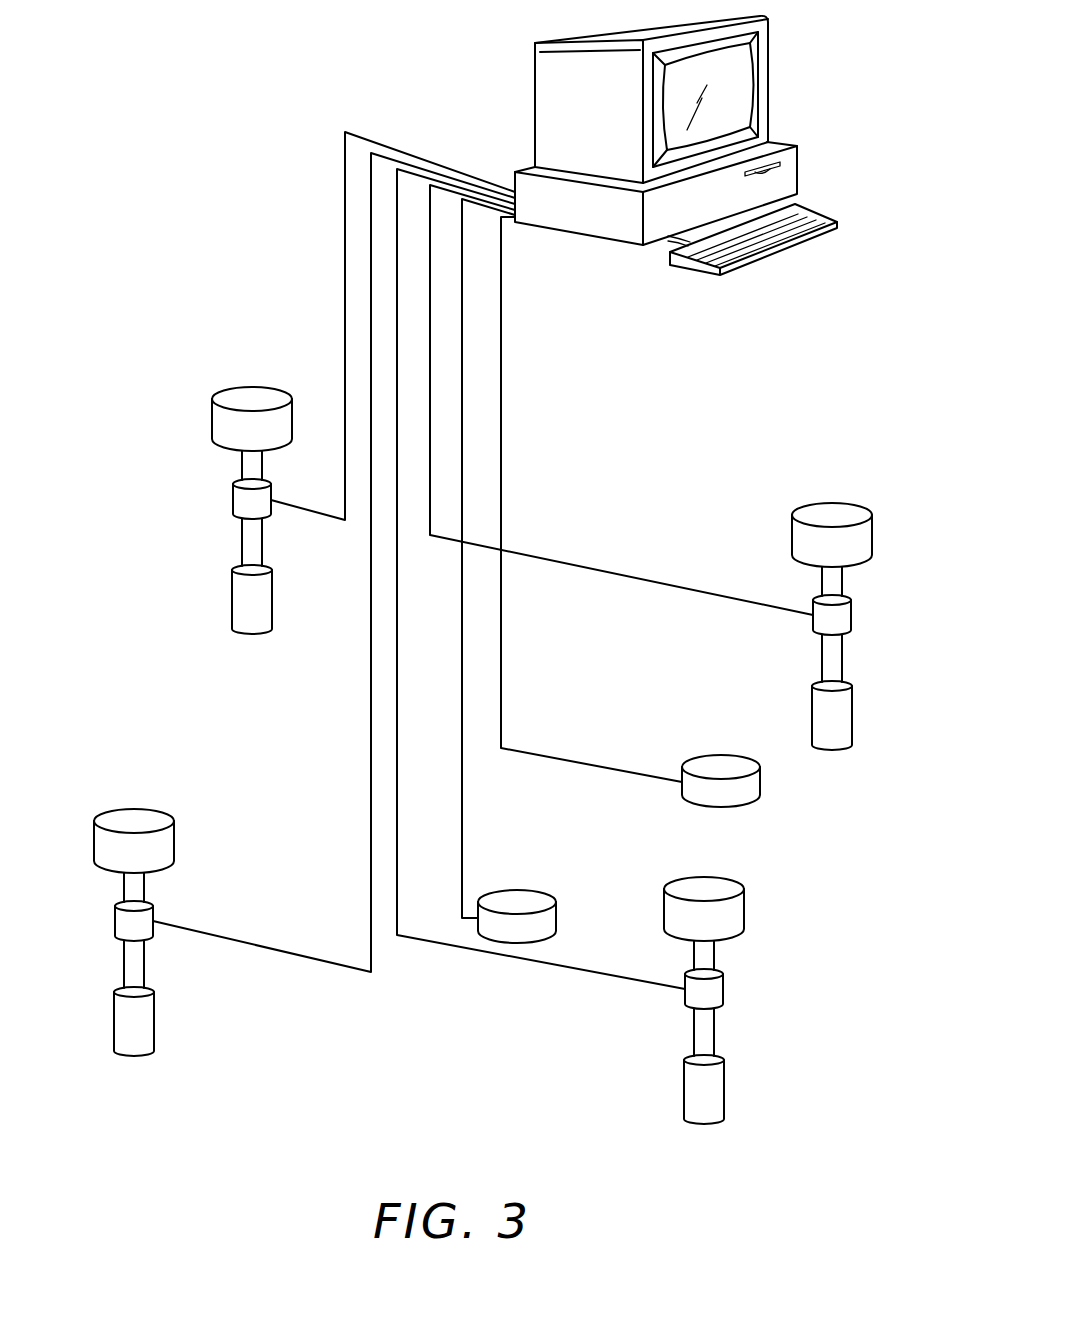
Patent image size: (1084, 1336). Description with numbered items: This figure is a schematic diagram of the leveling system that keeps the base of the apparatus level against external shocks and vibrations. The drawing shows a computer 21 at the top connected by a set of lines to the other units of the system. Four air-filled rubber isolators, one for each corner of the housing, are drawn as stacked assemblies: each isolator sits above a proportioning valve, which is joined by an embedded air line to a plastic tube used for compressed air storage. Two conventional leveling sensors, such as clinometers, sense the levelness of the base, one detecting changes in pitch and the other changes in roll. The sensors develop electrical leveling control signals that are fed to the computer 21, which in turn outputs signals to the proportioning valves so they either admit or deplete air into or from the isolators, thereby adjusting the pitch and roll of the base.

The computer 21 is at (781, 140).